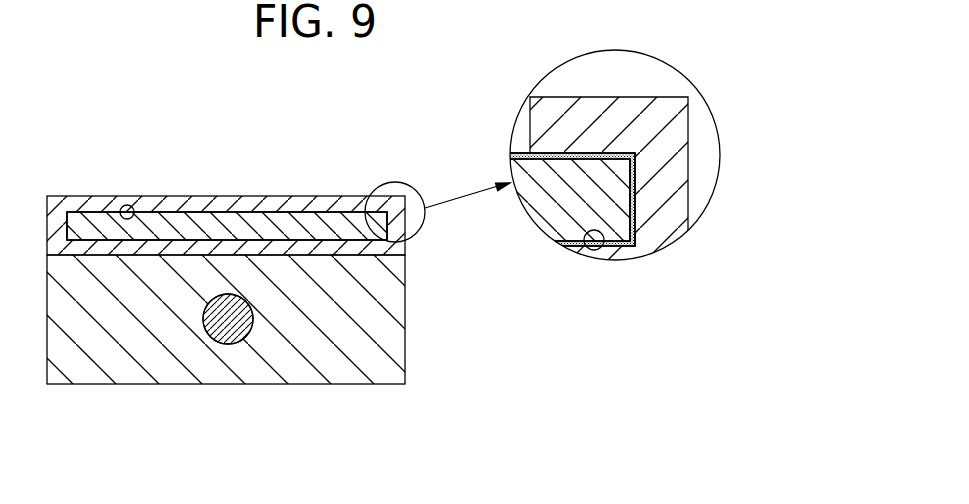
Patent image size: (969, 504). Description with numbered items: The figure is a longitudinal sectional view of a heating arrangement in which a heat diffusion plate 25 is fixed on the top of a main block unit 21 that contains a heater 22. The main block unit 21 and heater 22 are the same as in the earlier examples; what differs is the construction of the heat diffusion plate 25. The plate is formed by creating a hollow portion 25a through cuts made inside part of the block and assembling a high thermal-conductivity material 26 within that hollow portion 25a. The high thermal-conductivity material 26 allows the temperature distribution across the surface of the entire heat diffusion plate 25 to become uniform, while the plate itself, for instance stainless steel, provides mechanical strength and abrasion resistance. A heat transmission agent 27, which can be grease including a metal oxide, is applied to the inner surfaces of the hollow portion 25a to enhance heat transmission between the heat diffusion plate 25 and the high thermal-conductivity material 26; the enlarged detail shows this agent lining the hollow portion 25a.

The main block unit 21 is at (388, 338).
The heater 22 is at (232, 323).
The heat diffusion plate 25 is at (312, 196).
The hollow portion 25a is at (125, 206).
The high thermal-conductivity material 26 is at (233, 220).
The heat transmission agent 27 is at (543, 152).